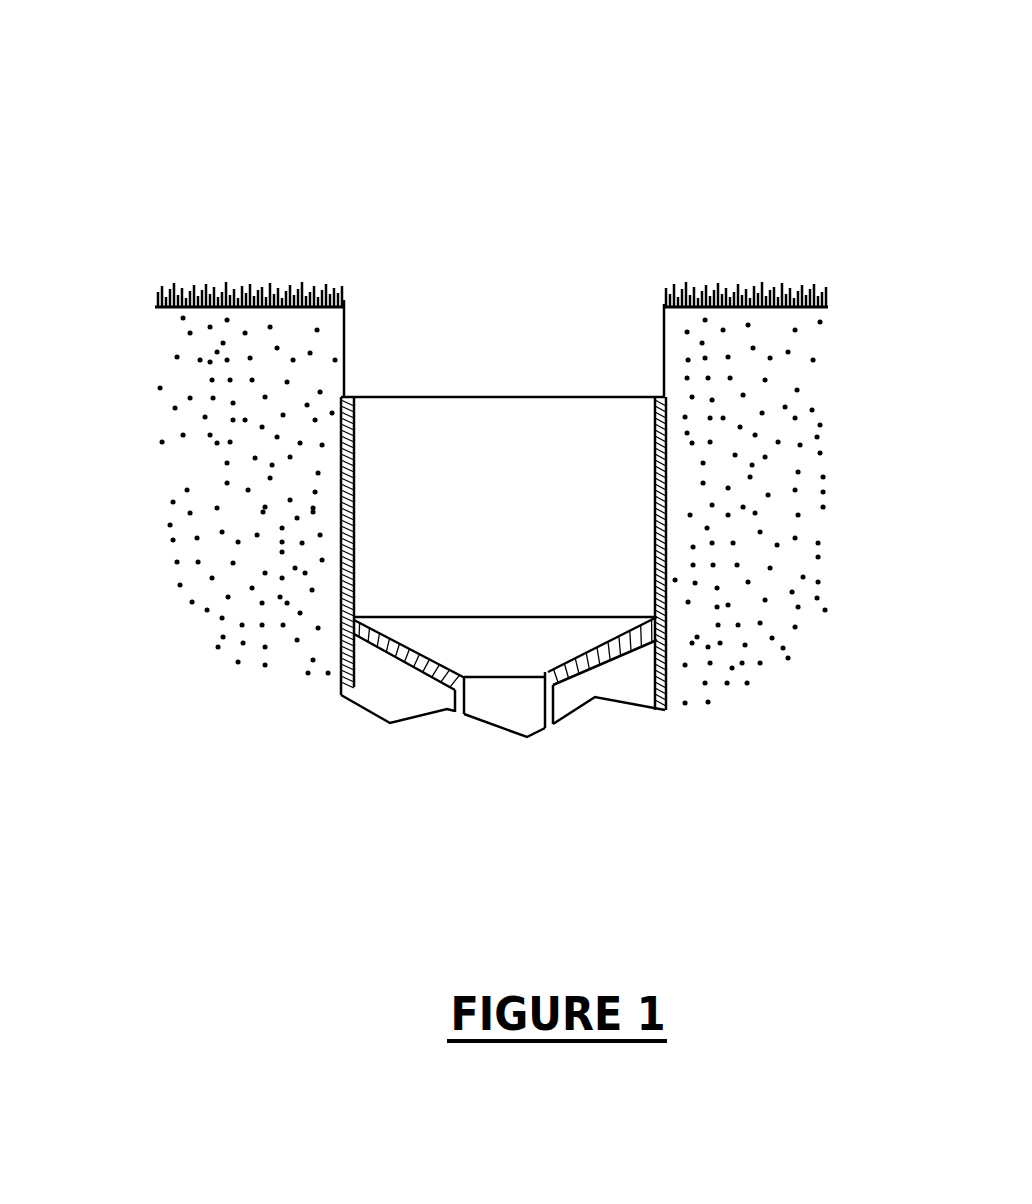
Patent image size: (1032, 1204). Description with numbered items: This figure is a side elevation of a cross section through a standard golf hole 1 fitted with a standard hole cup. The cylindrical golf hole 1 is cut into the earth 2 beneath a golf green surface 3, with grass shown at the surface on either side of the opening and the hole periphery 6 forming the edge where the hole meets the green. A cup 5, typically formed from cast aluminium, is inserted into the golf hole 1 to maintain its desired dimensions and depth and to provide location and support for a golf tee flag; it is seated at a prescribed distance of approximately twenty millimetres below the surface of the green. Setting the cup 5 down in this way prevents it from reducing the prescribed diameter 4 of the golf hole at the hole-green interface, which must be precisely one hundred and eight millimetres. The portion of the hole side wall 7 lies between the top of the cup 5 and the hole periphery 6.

The golf hole 1 is at (542, 150).
The earth 2 is at (235, 553).
The golf green surface 3 is at (255, 283).
The prescribed diameter 4 is at (638, 312).
The cup 5 is at (476, 551).
The hole periphery 6 is at (345, 302).
The hole side wall 7 is at (646, 363).